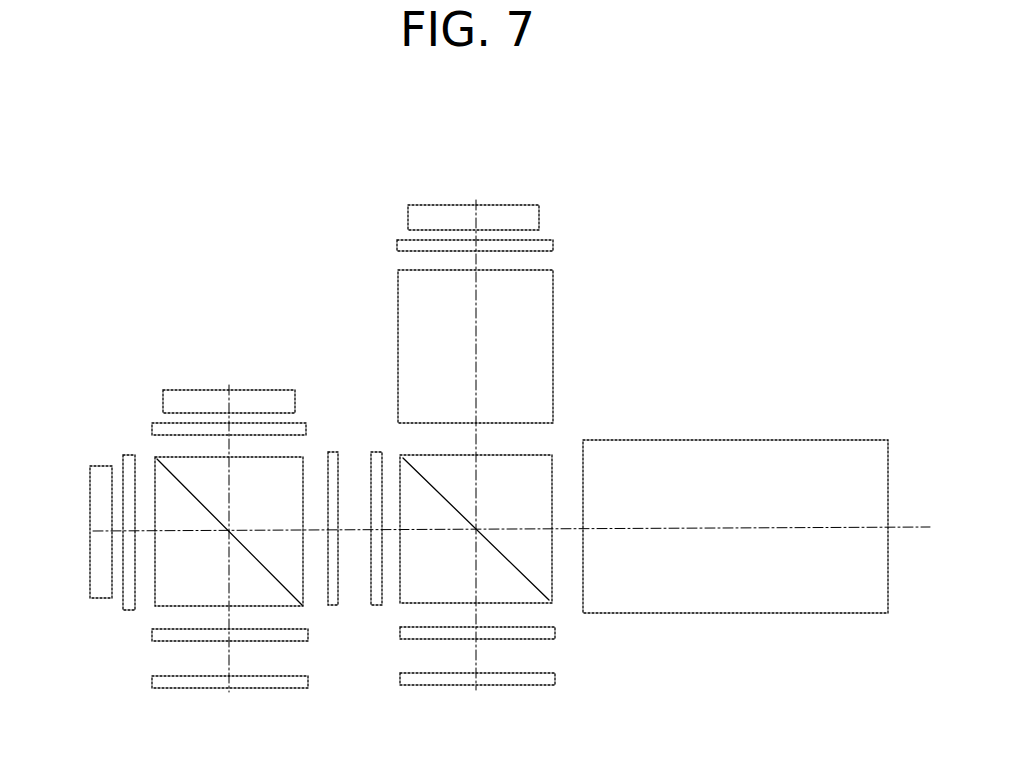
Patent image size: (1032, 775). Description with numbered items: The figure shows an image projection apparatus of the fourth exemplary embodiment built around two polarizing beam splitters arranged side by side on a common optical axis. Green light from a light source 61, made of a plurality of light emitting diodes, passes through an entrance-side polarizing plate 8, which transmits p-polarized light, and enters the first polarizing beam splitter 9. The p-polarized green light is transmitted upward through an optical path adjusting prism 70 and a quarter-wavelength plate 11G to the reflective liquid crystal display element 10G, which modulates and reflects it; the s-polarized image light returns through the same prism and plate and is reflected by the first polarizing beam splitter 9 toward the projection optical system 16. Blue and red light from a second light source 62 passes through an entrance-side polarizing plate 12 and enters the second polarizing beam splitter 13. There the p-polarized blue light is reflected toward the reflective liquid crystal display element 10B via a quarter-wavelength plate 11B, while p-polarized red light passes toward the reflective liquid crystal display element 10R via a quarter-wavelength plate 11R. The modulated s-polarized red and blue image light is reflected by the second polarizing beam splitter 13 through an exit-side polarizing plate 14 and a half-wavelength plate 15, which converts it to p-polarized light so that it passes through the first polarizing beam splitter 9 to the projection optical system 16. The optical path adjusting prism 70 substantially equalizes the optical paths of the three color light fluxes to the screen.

The reflective liquid crystal display element for green light 10G is at (541, 212).
The quarter-wavelength plate for green light 11G is at (553, 244).
The optical path adjusting prism 70 is at (553, 290).
The reflective liquid crystal display element for red light 10R is at (163, 402).
The quarter-wavelength plate for red light 11R is at (152, 428).
The reflective liquid crystal display element for blue light 10B is at (90, 495).
The quarter-wavelength plate for blue light 11B is at (128, 610).
The second polarizing beam splitter 13 is at (304, 595).
The exit-side polarizing plate 14 is at (331, 450).
The half-wavelength plate 15 is at (374, 450).
The first polarizing beam splitter 9 is at (404, 605).
The entrance-side polarizing plate 12 is at (308, 635).
The light source for blue light and red light 62 is at (308, 681).
The entrance-side polarizing plate 8 is at (555, 632).
The light source for green light 61 is at (555, 678).
The projection optical system 16 is at (800, 440).